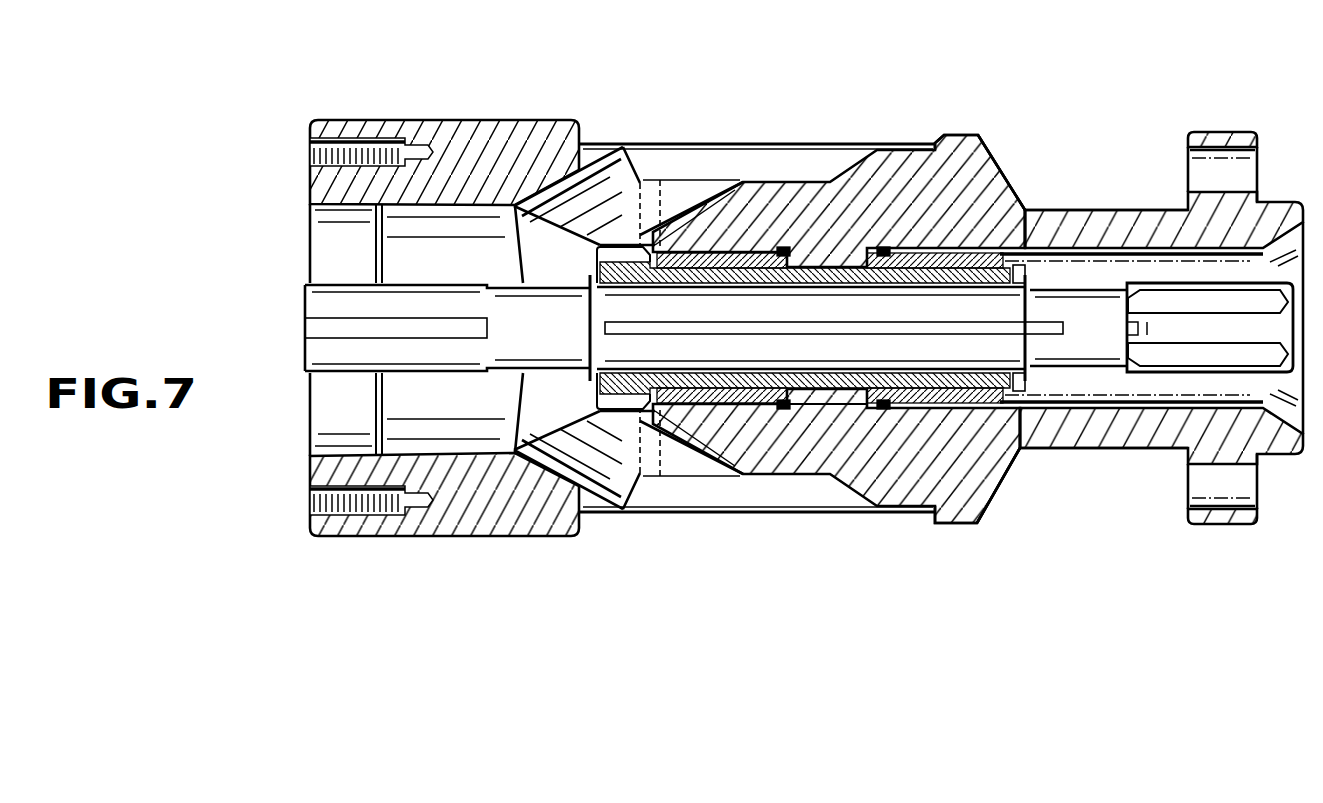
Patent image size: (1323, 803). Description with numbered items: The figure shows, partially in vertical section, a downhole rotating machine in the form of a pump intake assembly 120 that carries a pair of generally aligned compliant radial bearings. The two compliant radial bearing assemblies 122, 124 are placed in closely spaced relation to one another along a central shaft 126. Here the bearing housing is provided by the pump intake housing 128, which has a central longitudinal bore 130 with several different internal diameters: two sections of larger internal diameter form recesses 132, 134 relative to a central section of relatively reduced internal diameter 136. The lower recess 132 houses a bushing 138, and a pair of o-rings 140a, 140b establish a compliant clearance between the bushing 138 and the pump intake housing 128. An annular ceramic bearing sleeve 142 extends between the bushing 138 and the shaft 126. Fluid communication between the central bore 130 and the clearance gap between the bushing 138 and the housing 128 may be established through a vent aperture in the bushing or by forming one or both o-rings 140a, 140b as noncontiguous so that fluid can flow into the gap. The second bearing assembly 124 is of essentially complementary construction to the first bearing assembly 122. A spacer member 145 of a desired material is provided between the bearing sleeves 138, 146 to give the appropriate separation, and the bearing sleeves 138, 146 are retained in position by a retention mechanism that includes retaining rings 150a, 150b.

The pump intake assembly 120 is at (958, 553).
The compliant radial bearing assembly 122 is at (947, 245).
The compliant radial bearing assembly 124 is at (733, 243).
The central shaft 126 is at (503, 204).
The pump intake housing 128 is at (940, 533).
The central longitudinal bore 130 is at (1047, 262).
The lower recess 132 is at (906, 243).
The recess 134 is at (745, 255).
The central section of reduced internal diameter 136 is at (823, 252).
The bushing 138 is at (1028, 210).
The o-ring 140a is at (990, 150).
The o-ring 140b is at (895, 243).
The annular ceramic bearing sleeve 142 is at (1030, 217).
The spacer member 145 is at (827, 390).
The bearing sleeve 146 is at (640, 143).
The retaining ring 150a is at (1040, 392).
The retaining ring 150b is at (598, 375).